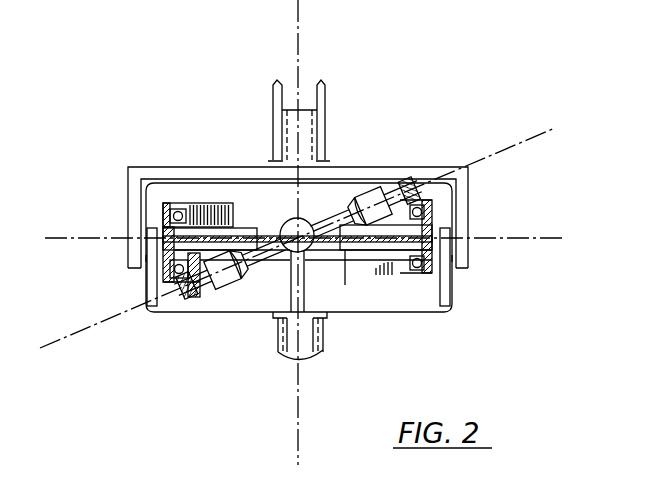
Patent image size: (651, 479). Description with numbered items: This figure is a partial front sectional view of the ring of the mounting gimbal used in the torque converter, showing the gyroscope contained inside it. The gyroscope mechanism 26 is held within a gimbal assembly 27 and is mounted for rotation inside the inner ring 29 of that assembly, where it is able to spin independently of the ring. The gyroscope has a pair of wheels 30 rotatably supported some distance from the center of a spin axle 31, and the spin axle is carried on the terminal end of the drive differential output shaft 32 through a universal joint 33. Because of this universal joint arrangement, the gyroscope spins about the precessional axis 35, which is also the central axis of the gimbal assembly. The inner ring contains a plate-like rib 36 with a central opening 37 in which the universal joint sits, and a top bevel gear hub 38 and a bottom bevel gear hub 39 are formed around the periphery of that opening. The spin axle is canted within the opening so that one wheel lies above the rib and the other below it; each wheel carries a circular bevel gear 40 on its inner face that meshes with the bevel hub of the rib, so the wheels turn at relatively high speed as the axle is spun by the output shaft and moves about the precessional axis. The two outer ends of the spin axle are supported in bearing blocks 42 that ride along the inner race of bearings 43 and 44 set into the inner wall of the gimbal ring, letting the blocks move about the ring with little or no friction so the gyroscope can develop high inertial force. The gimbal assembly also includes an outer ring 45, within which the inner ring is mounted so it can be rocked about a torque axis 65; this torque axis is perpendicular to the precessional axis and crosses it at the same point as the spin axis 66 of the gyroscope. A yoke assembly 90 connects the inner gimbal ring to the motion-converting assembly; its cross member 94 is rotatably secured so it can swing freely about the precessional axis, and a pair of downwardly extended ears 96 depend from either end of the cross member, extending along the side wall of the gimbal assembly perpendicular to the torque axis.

The gyroscope mechanism 26 is at (395, 173).
The gimbal assembly 27 is at (472, 278).
The inner ring 29 is at (432, 258).
The wheels 30 is at (360, 186).
The spin axle 31 is at (328, 246).
The drive differential output shaft 32 is at (308, 290).
The universal joint 33 is at (280, 226).
The precessional axis 35 is at (298, 30).
The plate-like rib 36 is at (201, 222).
The central opening 37 is at (264, 210).
The top bevel gear hub 38 is at (238, 230).
The bottom bevel gear hub 39 is at (375, 250).
The circular bevel gear 40 is at (400, 183).
The bearing blocks 42 is at (187, 294).
The bearing 43 is at (426, 207).
The bearing 44 is at (440, 278).
The outer ring 45 is at (325, 313).
The torque axis 65 is at (72, 240).
The spin axis 66 is at (90, 328).
The yoke assembly 90 is at (114, 185).
The cross member 94 is at (320, 123).
The ears 96 is at (130, 262).